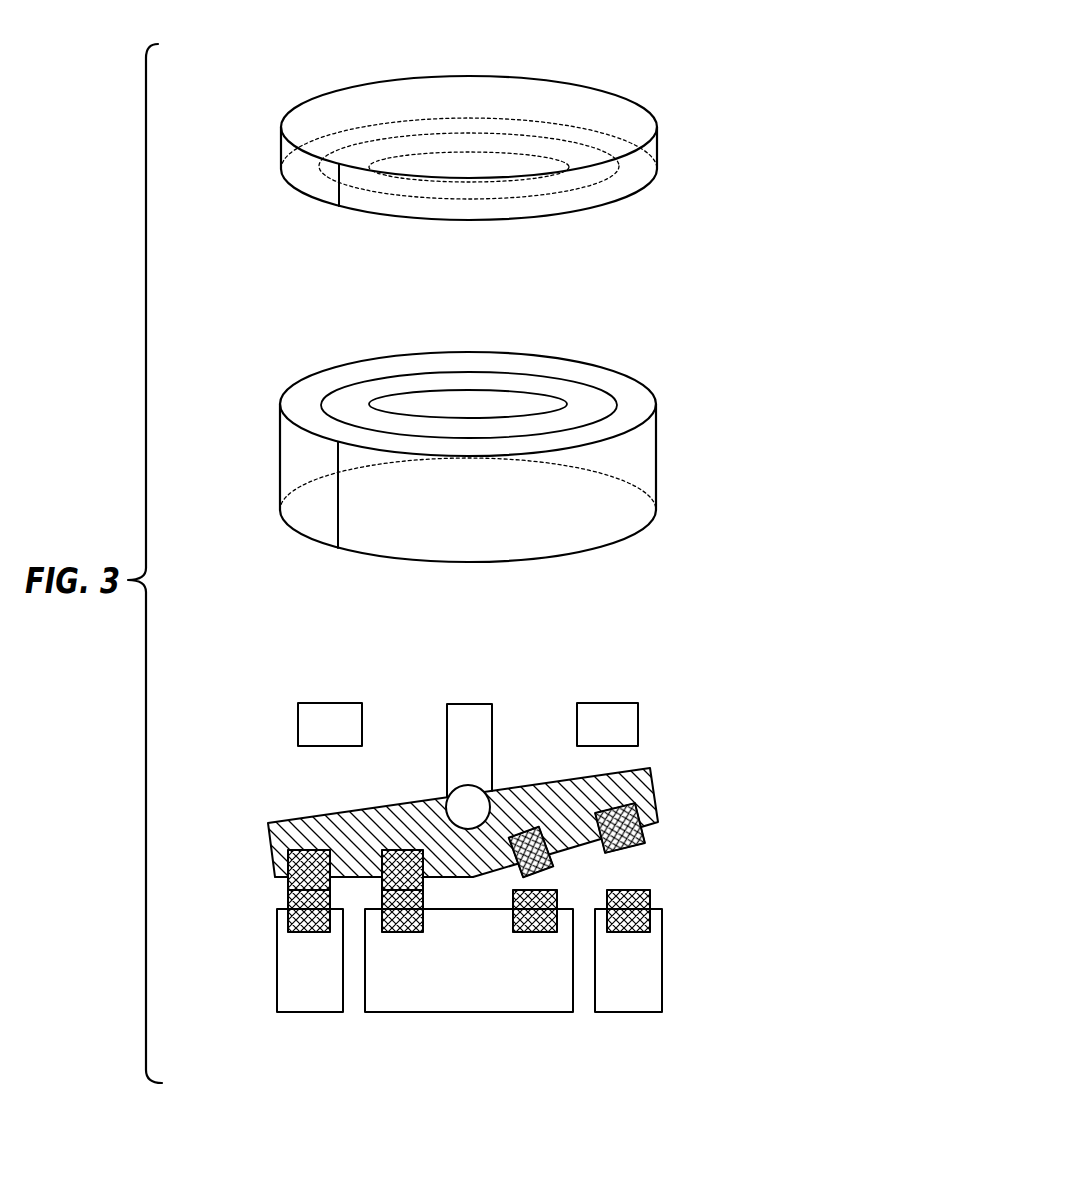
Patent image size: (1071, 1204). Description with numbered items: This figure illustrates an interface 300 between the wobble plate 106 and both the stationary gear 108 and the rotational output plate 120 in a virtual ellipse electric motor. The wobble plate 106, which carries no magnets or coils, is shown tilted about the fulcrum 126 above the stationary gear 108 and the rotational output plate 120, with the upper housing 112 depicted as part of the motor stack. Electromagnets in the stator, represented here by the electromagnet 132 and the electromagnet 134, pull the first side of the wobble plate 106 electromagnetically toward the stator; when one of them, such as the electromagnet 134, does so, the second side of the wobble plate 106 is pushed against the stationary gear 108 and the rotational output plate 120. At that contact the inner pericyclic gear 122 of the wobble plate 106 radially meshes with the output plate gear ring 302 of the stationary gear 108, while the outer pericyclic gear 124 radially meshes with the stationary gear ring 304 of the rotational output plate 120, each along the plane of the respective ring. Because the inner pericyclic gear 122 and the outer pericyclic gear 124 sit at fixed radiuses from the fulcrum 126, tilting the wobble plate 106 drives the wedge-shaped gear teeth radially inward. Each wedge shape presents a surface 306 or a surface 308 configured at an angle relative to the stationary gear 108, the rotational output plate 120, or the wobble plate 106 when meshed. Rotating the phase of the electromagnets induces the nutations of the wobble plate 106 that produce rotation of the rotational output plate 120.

The stacked assembly 300 is at (693, 45).
The wobble plate 106 is at (658, 150).
The upper housing 112 is at (657, 470).
The outer pericyclic gear 124 is at (322, 173).
The inner pericyclic gear 122 is at (567, 167).
The stationary gear ring 304 is at (322, 403).
The output plate gear ring 302 is at (567, 402).
The electromagnet 132 is at (315, 703).
The electromagnet 134 is at (592, 703).
The fulcrum 126 is at (460, 704).
The stationary gear 108 is at (307, 1012).
The rotational output plate 120 is at (462, 1012).
The surface of the wedge shape 306 is at (553, 853).
The surface of the wedge shape 308 is at (633, 850).